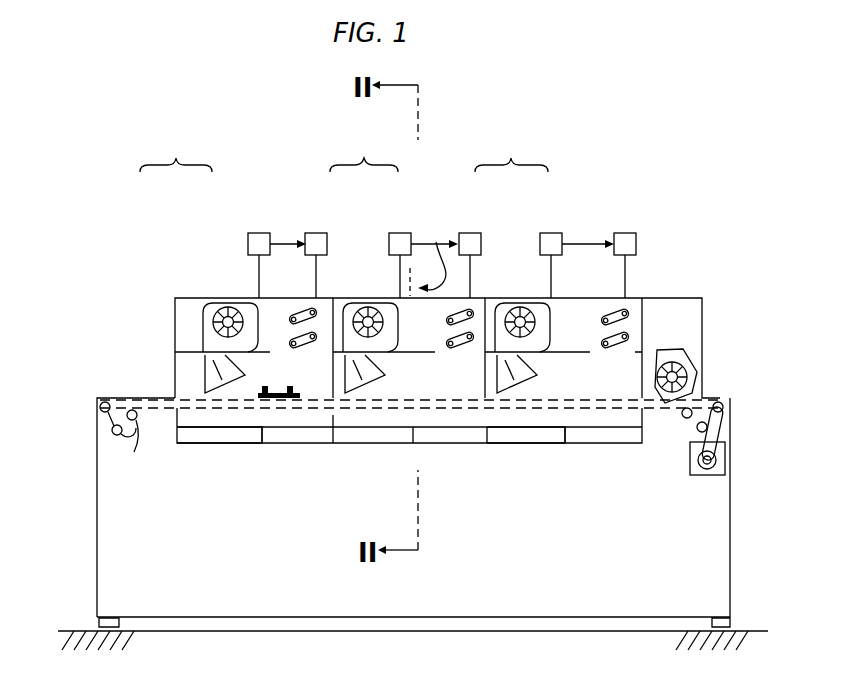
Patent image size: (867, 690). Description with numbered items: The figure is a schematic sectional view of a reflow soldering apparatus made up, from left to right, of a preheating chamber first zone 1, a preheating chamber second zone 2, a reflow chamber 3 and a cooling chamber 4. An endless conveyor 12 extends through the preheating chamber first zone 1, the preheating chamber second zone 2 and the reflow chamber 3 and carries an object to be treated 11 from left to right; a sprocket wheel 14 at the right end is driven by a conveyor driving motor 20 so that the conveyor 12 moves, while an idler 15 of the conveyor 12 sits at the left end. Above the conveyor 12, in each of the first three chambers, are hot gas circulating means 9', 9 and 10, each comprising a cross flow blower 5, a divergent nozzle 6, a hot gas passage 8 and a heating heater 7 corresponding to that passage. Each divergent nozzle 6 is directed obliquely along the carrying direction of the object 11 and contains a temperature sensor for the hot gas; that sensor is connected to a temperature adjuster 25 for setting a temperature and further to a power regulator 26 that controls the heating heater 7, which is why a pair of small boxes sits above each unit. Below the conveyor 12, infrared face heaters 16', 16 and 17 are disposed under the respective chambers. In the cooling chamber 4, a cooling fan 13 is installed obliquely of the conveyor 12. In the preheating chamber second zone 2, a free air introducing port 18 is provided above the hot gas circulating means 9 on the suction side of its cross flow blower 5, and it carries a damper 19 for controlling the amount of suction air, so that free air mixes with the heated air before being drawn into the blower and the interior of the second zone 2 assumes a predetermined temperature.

The preheating chamber first zone 1 is at (175, 300).
The preheating chamber second zone 2 is at (333, 298).
The reflow chamber 3 is at (655, 298).
The cooling chamber 4 is at (690, 298).
The cross flow blower 5 is at (205, 368).
The divergent nozzle 6 is at (196, 312).
The heating heater 7 is at (285, 312).
The hot gas passage 8 is at (208, 318).
The hot gas circulating means 9 is at (364, 148).
The hot gas circulating means 9' is at (176, 148).
The hot gas circulating means 10 is at (511, 150).
The object to be treated 11 is at (302, 396).
The conveyor 12 is at (128, 398).
The cooling fan 13 is at (680, 352).
The sprocket wheel 14 is at (718, 402).
The idler 15 is at (100, 405).
The infrared face heater 16 is at (409, 456).
The infrared face heater 16' is at (242, 463).
The infrared face heater 17 is at (555, 445).
The free air introducing port 18 is at (437, 252).
The damper 19 is at (410, 268).
The conveyor driving motor 20 is at (706, 476).
The temperature adjuster 25 is at (256, 233).
The power regulator 26 is at (308, 233).